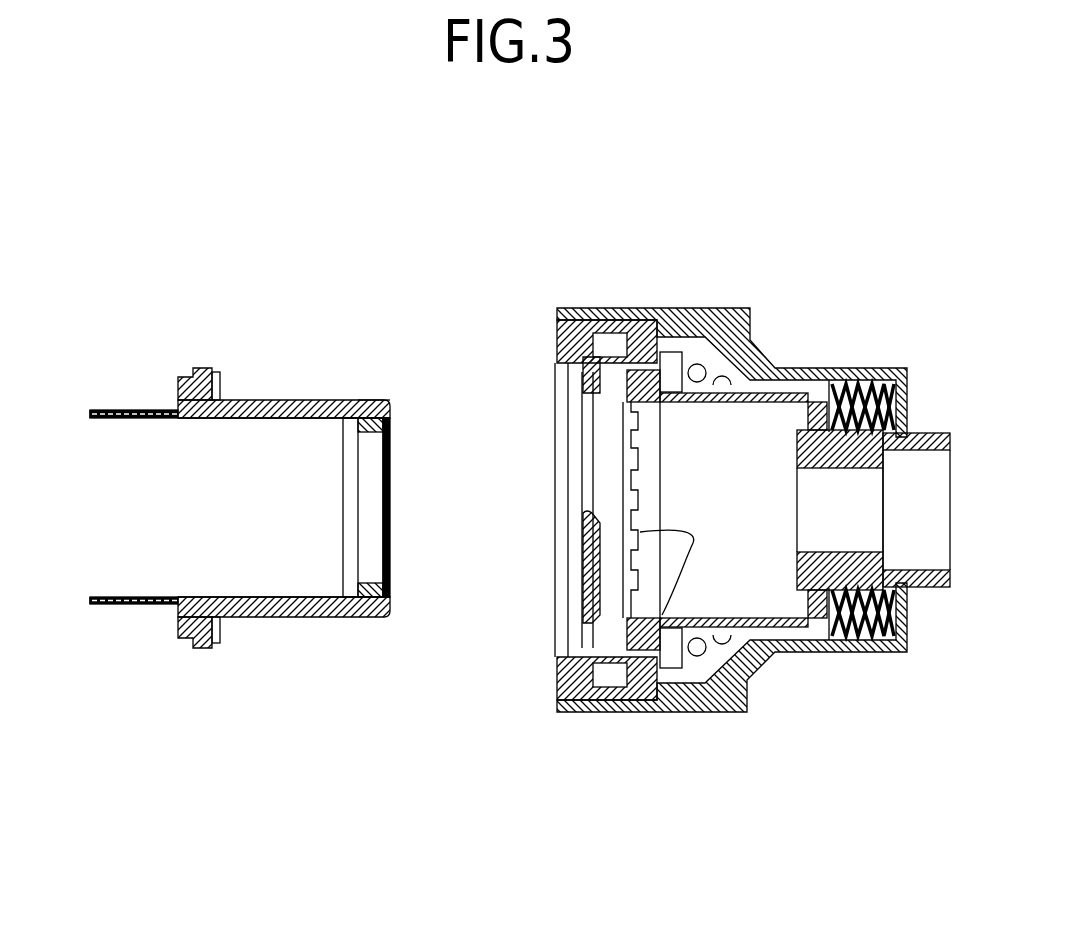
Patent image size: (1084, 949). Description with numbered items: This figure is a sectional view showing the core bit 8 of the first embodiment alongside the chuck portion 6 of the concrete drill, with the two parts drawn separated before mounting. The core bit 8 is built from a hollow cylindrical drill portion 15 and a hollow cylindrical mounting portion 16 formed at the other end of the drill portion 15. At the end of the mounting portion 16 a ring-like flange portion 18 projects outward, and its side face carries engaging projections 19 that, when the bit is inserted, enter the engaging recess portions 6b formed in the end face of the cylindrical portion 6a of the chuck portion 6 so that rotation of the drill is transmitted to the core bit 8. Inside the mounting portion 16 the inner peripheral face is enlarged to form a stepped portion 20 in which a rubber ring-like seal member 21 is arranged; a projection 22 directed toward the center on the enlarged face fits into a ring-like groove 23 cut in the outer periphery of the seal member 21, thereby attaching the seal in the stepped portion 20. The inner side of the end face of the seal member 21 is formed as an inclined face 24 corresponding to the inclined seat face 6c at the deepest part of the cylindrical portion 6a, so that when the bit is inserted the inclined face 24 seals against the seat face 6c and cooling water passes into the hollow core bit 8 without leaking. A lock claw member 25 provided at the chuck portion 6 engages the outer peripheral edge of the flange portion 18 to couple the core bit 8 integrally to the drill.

The core bit 8 is at (125, 291).
The drill portion 15 is at (130, 605).
The mounting portion 16 is at (320, 618).
The flange portion 18 is at (203, 367).
The engaging projection 19 is at (223, 380).
The stepped portion 20 is at (340, 442).
The ring-like seal member 21 is at (387, 462).
The projection 22 is at (370, 585).
The ring-like groove 23 is at (365, 402).
The inclined face 24 is at (390, 432).
The lock claw member 25 is at (598, 335).
The chuck portion 6 is at (815, 330).
The cylindrical portion 6a is at (757, 658).
The engaging recess portion 6b is at (690, 712).
The inclined seat face 6c is at (765, 418).